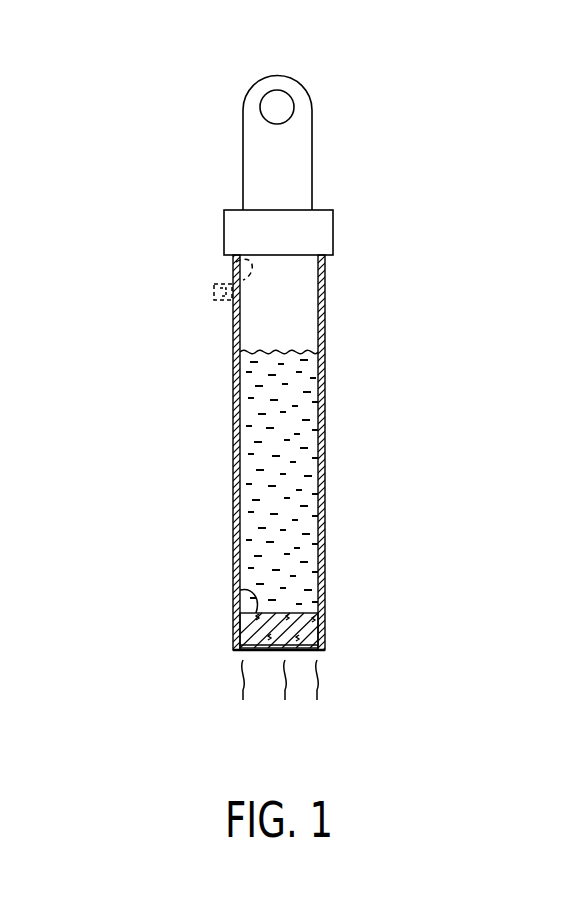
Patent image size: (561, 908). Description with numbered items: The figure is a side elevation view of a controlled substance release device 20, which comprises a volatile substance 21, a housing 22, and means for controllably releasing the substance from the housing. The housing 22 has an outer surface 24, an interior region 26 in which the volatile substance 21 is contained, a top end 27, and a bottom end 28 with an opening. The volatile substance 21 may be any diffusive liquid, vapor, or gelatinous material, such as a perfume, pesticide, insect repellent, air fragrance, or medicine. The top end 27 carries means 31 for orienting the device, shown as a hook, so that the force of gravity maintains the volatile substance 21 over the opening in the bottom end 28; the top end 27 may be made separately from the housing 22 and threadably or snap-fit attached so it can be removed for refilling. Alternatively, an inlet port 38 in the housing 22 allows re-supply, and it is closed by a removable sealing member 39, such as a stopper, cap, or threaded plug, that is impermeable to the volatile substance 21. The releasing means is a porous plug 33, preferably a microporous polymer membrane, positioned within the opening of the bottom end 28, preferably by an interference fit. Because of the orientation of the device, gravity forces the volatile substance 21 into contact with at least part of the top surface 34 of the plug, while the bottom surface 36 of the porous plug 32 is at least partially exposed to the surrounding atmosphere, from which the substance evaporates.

The controlled substance release device 20 is at (130, 66).
The volatile substance 21 is at (258, 473).
The housing 22 is at (322, 335).
The outer surface 24 is at (325, 505).
The interior region 26 is at (265, 318).
The top end 27 is at (336, 171).
The bottom end 28 is at (364, 621).
The means for orienting the device 31 is at (287, 85).
The porous plug 32 is at (240, 627).
The porous plug 33 is at (248, 650).
The top surface 34 is at (240, 590).
The bottom surface 36 is at (320, 651).
The inlet port 38 is at (232, 262).
The removable sealing member 39 is at (214, 300).